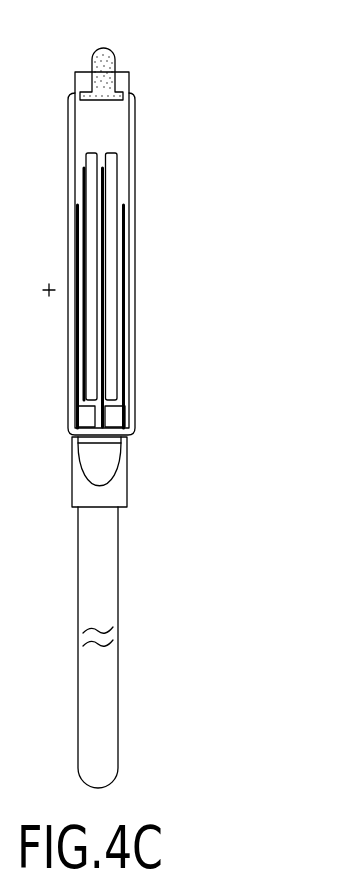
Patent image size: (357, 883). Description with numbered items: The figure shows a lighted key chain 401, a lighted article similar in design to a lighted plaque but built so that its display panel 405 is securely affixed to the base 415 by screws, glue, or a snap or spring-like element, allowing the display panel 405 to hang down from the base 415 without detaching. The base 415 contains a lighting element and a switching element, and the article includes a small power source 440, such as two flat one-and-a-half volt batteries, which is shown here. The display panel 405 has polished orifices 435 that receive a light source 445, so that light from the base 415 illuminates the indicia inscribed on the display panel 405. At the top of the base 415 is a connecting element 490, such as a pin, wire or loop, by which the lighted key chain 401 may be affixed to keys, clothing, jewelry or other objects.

The lighted key chain 401 is at (169, 404).
The display panel 405 is at (117, 650).
The base 415 is at (137, 139).
The polished orifices 435 is at (127, 454).
The power source 440 is at (112, 212).
The light source 445 is at (100, 474).
The connecting element 490 is at (112, 53).